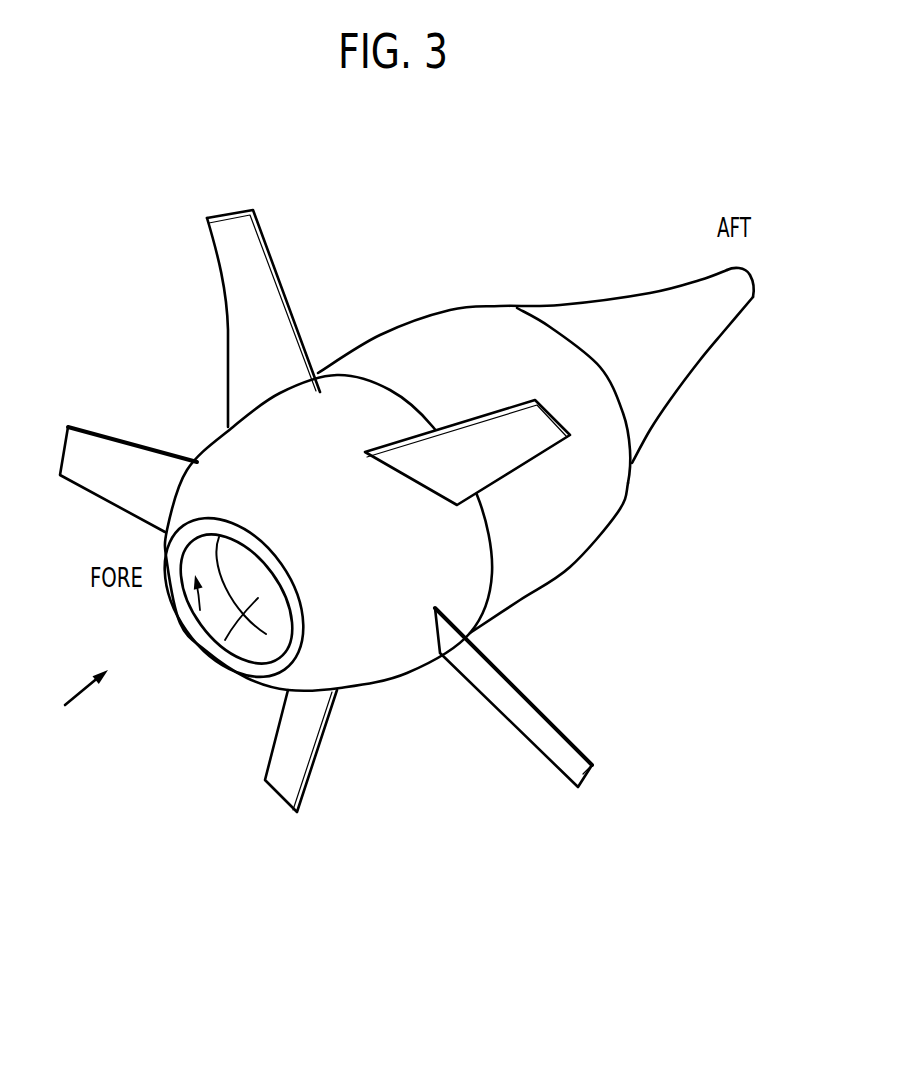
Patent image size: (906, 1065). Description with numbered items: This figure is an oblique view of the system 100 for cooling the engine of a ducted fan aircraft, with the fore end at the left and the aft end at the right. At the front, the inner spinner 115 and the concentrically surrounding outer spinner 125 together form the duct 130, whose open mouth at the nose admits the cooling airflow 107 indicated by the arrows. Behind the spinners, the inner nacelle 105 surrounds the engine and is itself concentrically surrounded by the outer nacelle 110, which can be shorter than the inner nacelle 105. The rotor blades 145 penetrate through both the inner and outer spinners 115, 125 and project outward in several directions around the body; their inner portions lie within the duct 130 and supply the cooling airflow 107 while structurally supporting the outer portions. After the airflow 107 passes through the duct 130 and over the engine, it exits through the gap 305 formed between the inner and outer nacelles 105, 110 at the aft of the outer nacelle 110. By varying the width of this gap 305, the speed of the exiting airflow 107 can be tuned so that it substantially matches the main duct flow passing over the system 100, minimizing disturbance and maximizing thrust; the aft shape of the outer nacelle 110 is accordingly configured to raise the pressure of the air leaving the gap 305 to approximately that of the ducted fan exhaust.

The system for cooling an engine of an aircraft 100 is at (407, 502).
The inner nacelle 105 is at (700, 360).
The airflow 107 is at (82, 693).
The outer nacelle 110 is at (550, 580).
The inner spinner 115 is at (225, 640).
The outer spinner 125 is at (380, 682).
The duct 130 is at (200, 610).
The rotor blades 145 is at (232, 210).
The gap 305 is at (507, 307).